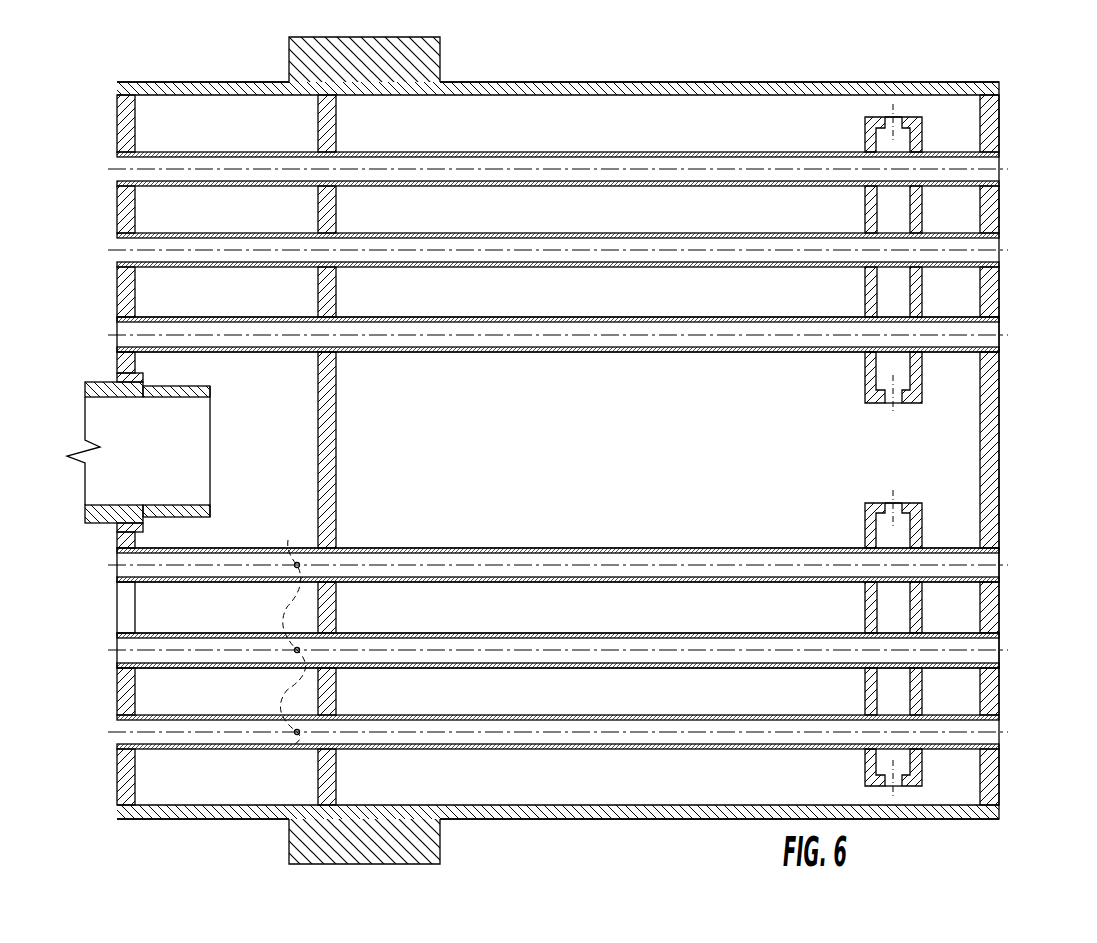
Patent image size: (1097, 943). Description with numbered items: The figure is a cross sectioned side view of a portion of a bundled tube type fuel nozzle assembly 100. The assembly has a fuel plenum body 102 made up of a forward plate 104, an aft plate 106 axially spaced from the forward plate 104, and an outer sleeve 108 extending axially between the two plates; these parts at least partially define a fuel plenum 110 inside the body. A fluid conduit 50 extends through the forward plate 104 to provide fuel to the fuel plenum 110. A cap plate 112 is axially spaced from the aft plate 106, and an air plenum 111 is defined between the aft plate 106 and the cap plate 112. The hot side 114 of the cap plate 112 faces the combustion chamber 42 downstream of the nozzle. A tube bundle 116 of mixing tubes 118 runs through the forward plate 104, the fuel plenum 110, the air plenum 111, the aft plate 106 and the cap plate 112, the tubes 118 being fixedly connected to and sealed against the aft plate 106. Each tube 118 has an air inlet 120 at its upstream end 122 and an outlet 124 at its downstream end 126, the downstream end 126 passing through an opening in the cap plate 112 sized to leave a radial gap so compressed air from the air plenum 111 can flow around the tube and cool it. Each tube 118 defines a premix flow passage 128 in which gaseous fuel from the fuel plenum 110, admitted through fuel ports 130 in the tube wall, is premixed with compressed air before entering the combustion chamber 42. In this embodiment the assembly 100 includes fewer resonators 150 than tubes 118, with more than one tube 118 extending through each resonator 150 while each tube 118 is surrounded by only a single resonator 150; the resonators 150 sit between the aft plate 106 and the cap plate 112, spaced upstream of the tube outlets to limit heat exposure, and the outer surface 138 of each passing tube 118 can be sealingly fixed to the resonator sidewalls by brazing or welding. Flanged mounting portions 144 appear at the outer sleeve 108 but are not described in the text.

The fuel nozzle assembly 100 is at (973, 57).
The fuel plenum body 102 is at (244, 836).
The forward plate 104 is at (117, 767).
The aft plate 106 is at (337, 453).
The outer sleeve 108 is at (180, 820).
The fuel plenum 110 is at (280, 481).
The air plenum 111 is at (660, 463).
The cap plate 112 is at (102, 420).
The hot side 114 is at (996, 771).
The tube bundle 116 is at (686, 128).
The tubes 118 is at (752, 152).
The air inlet 120 is at (119, 657).
The upstream end 122 is at (110, 645).
The outlet 124 is at (993, 644).
The downstream end 126 is at (1013, 664).
The premix flow passage 128 is at (581, 643).
The fuel ports 130 is at (290, 656).
The outer surface 138 is at (612, 352).
The mounting flange 144 is at (302, 48).
The resonators 150 is at (922, 127).
The combustion chamber 42 is at (1063, 463).
The fluid conduit 50 is at (97, 527).